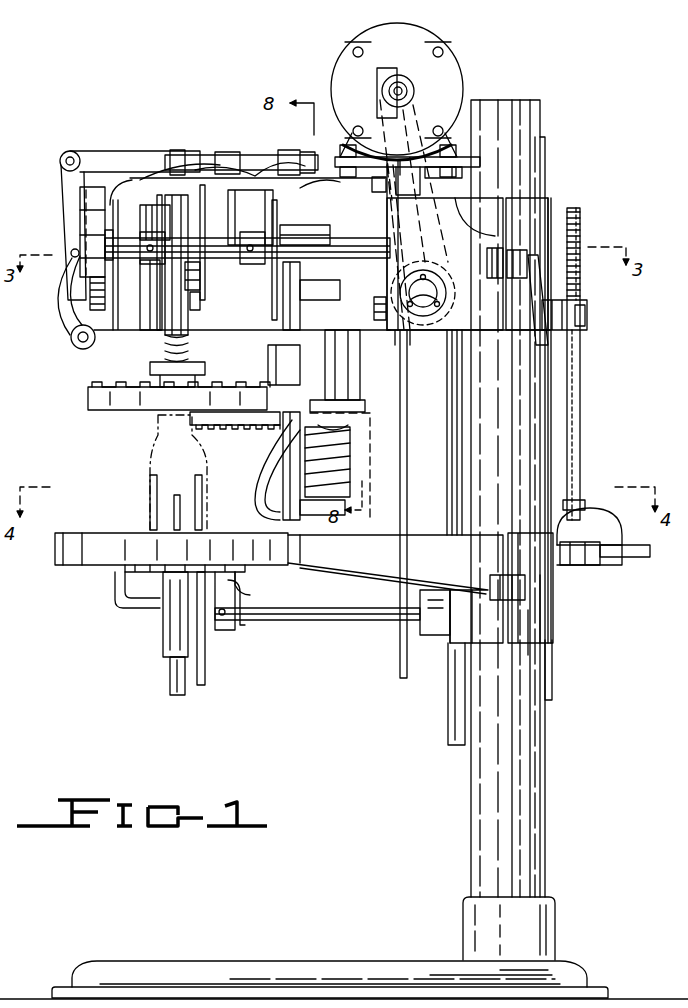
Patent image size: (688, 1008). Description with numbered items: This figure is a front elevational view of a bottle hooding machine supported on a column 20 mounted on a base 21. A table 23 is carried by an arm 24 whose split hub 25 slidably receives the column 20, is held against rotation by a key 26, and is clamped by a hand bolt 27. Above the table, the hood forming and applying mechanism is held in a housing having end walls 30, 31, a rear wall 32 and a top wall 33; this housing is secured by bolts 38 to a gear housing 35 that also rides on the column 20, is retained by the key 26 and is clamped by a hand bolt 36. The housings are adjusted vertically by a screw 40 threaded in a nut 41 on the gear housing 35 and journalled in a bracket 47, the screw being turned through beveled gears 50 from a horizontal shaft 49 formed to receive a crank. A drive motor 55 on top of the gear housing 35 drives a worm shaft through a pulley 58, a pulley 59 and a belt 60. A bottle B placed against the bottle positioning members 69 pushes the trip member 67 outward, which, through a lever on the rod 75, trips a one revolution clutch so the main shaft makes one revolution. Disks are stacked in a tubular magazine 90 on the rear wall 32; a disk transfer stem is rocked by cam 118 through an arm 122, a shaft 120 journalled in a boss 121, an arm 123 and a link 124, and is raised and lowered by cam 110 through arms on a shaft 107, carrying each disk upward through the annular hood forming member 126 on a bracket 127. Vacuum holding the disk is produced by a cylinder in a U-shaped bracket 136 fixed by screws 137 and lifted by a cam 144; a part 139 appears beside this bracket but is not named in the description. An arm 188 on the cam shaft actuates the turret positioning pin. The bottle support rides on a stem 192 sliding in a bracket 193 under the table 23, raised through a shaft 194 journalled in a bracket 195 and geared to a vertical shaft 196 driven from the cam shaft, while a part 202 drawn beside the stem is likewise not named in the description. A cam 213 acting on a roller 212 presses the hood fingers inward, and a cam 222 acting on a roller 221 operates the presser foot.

The column 20 is at (471, 800).
The base 21 is at (352, 966).
The table 23 is at (90, 564).
The arm 24 is at (395, 589).
The split hub 25 is at (550, 614).
The key 26 is at (547, 672).
The hand bolt 27 is at (535, 603).
The end wall 30 is at (118, 294).
The end wall 31 is at (388, 282).
The rear wall 32 is at (435, 271).
The top wall 33 is at (250, 185).
The gear housing 35 is at (482, 275).
The hand bolt 36 is at (533, 300).
The bolts 38 is at (374, 196).
The screw 40 is at (580, 400).
The nut 41 is at (588, 312).
The bracket 47 is at (600, 515).
The shaft 49 is at (638, 560).
The beveled gears 50 is at (588, 565).
The drive motor 55 is at (420, 32).
The pulley 58 is at (413, 86).
The pulley 59 is at (450, 308).
The belt 60 is at (430, 190).
The trip member 67 is at (177, 495).
The bottle positioning members 69 is at (150, 499).
The rod 75 is at (403, 466).
The tubular magazine 90 is at (358, 350).
The shaft 107 is at (255, 162).
The cam 110 is at (247, 255).
The cam 118 is at (82, 200).
The shaft 120 is at (76, 346).
The boss 121 is at (100, 332).
The arm 122 is at (62, 312).
The arm 123 is at (72, 216).
The link 124 is at (130, 155).
The annular hood forming member 126 is at (240, 425).
The bracket 127 is at (340, 373).
The U-shaped bracket 136 is at (318, 310).
The screws 137 is at (250, 332).
The block 139 is at (270, 361).
The cam 144 is at (272, 214).
The arm 188 is at (222, 216).
The stem 192 is at (168, 678).
The bracket 193 is at (163, 621).
The shaft 194 is at (302, 615).
The bracket 195 is at (232, 602).
The shaft 196 is at (455, 425).
The rod 202 is at (203, 661).
The roller 212 is at (200, 298).
The cam 213 is at (196, 282).
The roller 221 is at (160, 310).
The cam 222 is at (160, 210).
The bottle B is at (205, 468).